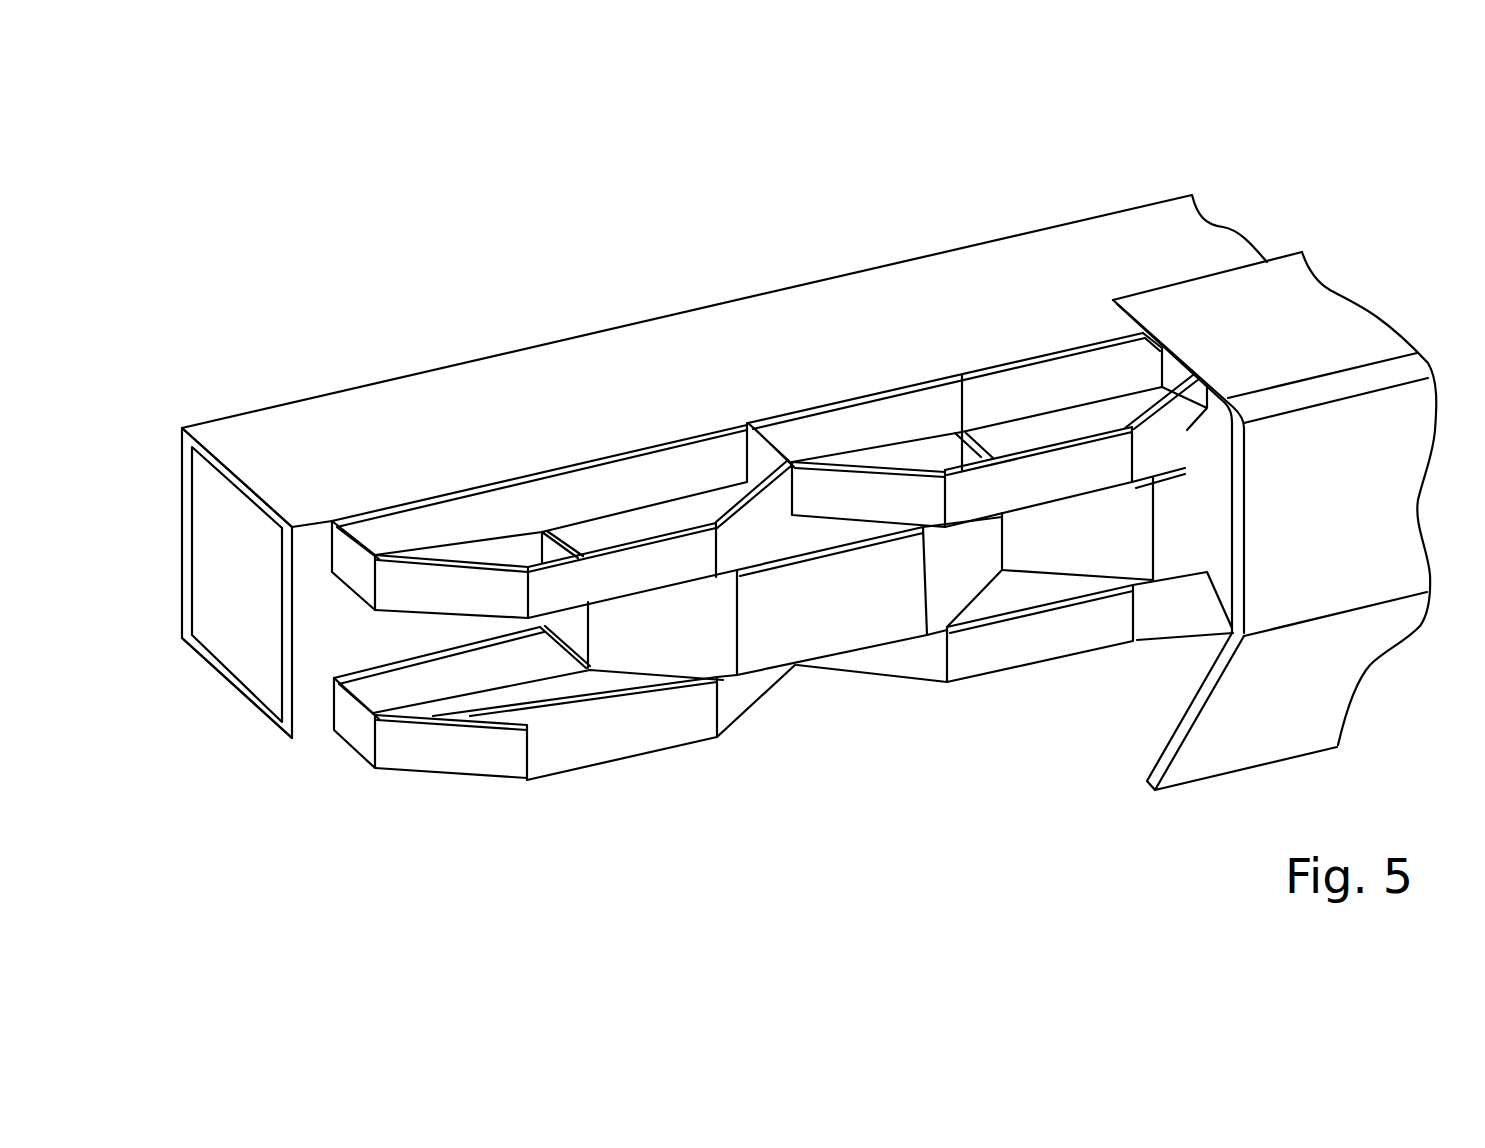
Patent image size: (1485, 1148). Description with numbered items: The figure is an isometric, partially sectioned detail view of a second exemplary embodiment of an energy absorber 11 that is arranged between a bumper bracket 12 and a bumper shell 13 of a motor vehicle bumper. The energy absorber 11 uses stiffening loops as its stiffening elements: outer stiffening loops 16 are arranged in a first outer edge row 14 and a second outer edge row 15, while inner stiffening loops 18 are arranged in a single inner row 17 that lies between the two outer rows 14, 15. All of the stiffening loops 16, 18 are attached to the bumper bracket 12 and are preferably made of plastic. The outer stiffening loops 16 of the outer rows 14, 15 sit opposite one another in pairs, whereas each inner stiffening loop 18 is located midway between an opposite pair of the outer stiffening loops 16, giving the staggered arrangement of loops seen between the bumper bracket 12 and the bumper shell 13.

The energy absorber 11 is at (368, 795).
The bumper bracket 12 is at (505, 410).
The bumper shell 13 is at (1360, 542).
The first outer edge row 14 is at (311, 570).
The second outer edge row 15 is at (312, 708).
The outer stiffening loops 16 is at (653, 477).
The inner row 17 is at (415, 638).
The inner stiffening loops 18 is at (796, 633).